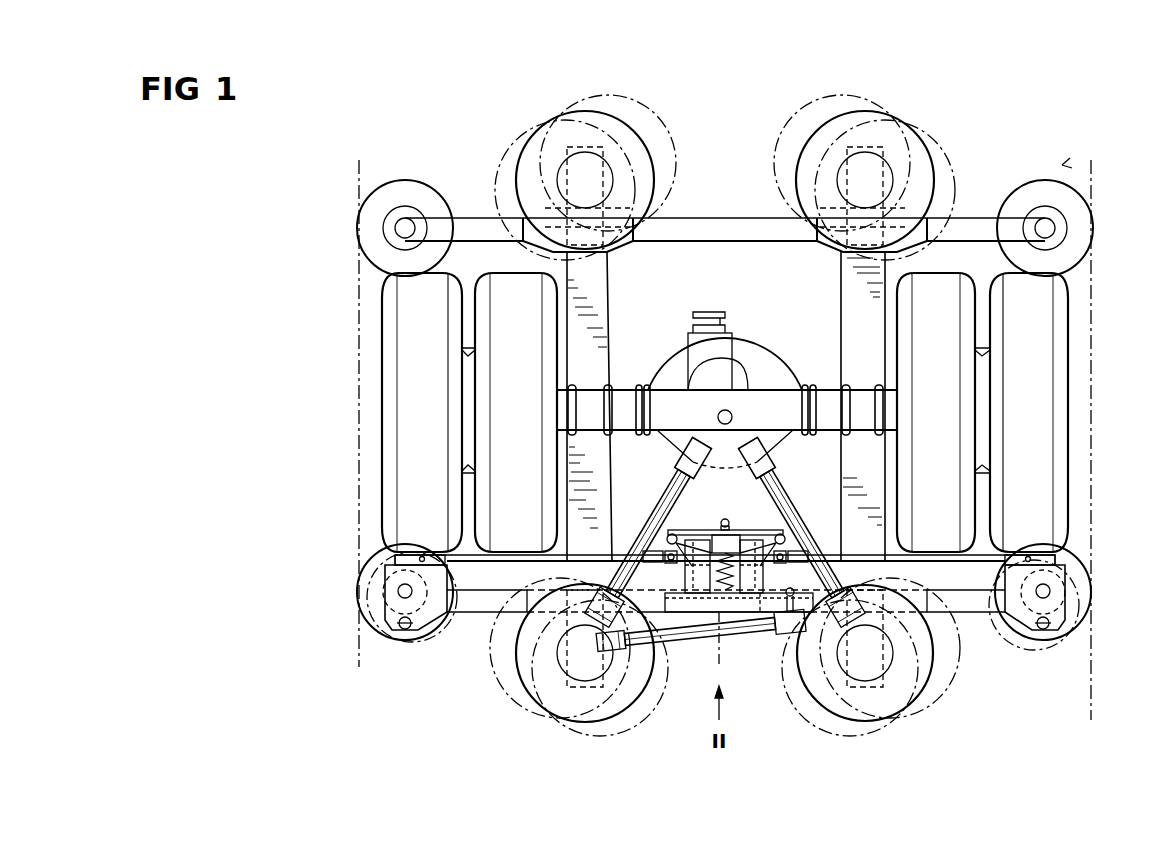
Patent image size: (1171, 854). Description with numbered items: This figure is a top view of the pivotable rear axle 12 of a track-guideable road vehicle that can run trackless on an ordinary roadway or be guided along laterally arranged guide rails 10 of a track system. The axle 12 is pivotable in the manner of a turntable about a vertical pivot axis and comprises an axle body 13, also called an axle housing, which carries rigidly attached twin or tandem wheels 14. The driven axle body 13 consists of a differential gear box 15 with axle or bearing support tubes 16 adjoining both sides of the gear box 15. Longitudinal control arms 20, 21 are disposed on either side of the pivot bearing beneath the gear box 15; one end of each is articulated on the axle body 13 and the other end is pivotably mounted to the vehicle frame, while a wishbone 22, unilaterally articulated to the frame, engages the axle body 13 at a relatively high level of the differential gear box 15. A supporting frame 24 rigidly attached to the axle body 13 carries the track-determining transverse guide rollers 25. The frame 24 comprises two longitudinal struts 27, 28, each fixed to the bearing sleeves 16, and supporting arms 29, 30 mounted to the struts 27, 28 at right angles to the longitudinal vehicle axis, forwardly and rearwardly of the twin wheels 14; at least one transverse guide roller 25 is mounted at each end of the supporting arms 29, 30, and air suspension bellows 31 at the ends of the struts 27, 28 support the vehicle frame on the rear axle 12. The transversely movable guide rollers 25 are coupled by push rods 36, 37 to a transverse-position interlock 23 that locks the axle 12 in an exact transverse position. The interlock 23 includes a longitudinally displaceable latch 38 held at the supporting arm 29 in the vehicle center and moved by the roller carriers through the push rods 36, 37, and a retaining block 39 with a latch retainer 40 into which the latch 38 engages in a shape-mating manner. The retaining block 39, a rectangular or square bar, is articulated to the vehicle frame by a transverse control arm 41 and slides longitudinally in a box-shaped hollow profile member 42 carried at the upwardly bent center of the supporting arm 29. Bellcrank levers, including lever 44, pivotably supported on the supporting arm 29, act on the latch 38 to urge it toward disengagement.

The guide rails 10 is at (357, 358).
The rear axle 12 is at (1062, 165).
The axle body 13 is at (658, 362).
The twin wheels 14 is at (412, 507).
The differential gear box 15 is at (740, 353).
The axle bearing sleeves 16 is at (828, 398).
The longitudinal control arm 20 is at (755, 510).
The longitudinal control arm 21 is at (697, 515).
The wishbone 22 is at (760, 482).
The transverse-position interlock 23 is at (655, 625).
The supporting frame 24 is at (548, 572).
The transverse guide rollers 25 is at (375, 252).
The longitudinal strut 27 is at (853, 457).
The longitudinal strut 28 is at (598, 265).
The supporting arm 29 is at (960, 607).
The supporting arm 30 is at (722, 228).
The air suspension bellows 31 is at (525, 165).
The push rod 36 is at (832, 555).
The push rod 37 is at (622, 560).
The latch 38 is at (752, 602).
The retaining block 39 is at (768, 617).
The latch retainer 40 is at (718, 646).
The tie rod 41 is at (685, 633).
The box-shaped hollow profile member 42 is at (787, 557).
The bellcrank lever 44 is at (688, 576).